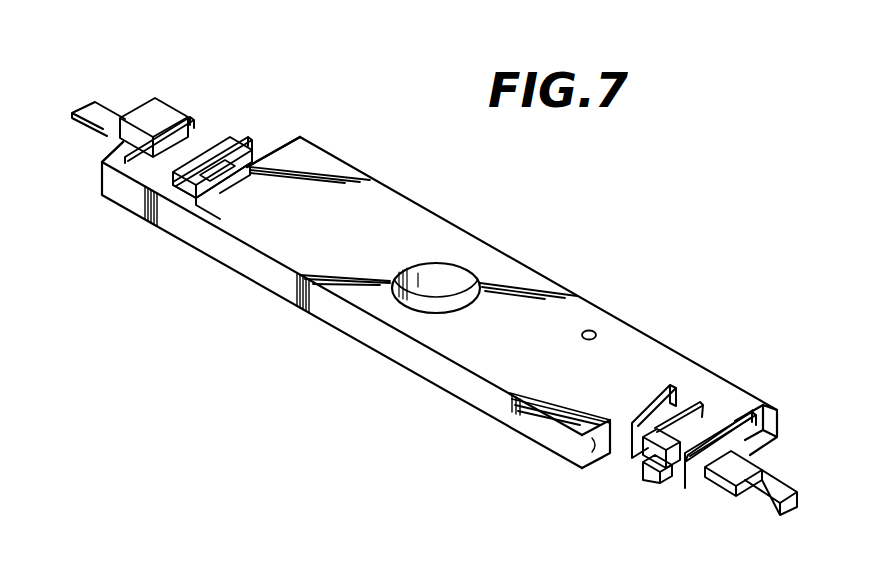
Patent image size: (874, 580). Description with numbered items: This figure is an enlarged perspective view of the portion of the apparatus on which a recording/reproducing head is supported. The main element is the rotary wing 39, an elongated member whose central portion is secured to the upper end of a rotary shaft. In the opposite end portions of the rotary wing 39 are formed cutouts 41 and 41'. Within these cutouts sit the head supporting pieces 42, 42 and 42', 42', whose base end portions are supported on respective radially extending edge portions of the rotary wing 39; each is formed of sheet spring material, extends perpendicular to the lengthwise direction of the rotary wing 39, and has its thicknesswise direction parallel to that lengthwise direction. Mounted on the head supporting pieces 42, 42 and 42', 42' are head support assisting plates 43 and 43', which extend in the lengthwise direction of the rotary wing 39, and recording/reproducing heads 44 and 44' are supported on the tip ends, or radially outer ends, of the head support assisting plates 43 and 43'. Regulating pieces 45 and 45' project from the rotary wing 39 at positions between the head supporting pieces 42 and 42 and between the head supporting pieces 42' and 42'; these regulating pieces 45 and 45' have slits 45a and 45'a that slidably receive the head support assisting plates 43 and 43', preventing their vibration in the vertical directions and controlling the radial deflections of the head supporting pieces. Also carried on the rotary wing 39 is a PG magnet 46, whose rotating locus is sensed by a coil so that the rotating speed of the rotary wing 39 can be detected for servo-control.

The rotary wing 39 is at (481, 238).
The cutout 41 is at (579, 471).
The cutout 41' is at (211, 125).
The head supporting piece 42 is at (670, 465).
The head supporting piece 42' is at (201, 128).
The head support assisting plate 43 is at (733, 505).
The head support assisting plate 43' is at (154, 109).
The recording/reproducing head 44 is at (791, 480).
The recording/reproducing head 44' is at (92, 90).
The regulating piece 45 is at (651, 476).
The regulating piece 45' is at (212, 119).
The slit 45a is at (700, 438).
The slit 45'a is at (230, 195).
The PG magnet 46 is at (591, 330).